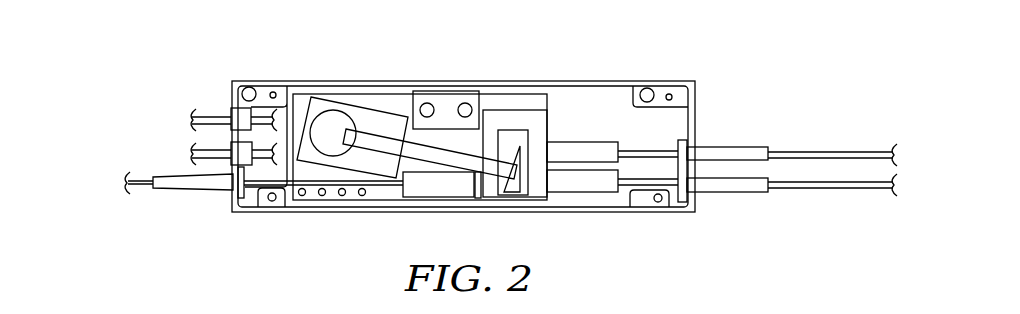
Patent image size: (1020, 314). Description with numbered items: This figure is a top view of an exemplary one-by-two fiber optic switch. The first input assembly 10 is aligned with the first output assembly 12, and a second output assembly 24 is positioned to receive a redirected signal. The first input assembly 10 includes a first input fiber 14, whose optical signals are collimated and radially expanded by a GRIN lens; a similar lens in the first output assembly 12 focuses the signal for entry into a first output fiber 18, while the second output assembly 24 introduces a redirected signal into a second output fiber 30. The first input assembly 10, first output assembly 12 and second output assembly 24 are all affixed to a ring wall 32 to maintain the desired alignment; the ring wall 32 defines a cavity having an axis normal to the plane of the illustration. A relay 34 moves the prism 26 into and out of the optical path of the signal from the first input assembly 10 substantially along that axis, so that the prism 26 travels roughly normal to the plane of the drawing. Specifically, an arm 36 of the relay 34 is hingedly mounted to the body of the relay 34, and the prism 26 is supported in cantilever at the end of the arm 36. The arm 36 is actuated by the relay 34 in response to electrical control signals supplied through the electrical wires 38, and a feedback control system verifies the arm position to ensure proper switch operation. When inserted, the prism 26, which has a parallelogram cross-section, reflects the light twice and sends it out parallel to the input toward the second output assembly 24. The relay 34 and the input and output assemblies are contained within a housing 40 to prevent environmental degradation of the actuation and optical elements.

The first input assembly 10 is at (432, 188).
The first output assembly 12 is at (583, 182).
The first input fiber 14 is at (140, 177).
The first output fiber 18 is at (828, 192).
The second output assembly 24 is at (585, 148).
The prism 26 is at (517, 147).
The second output fiber 30 is at (825, 148).
The ring wall 32 is at (508, 117).
The relay 34 is at (357, 110).
The arm 36 is at (387, 142).
The electrical wires 38 is at (187, 148).
The housing 40 is at (627, 80).